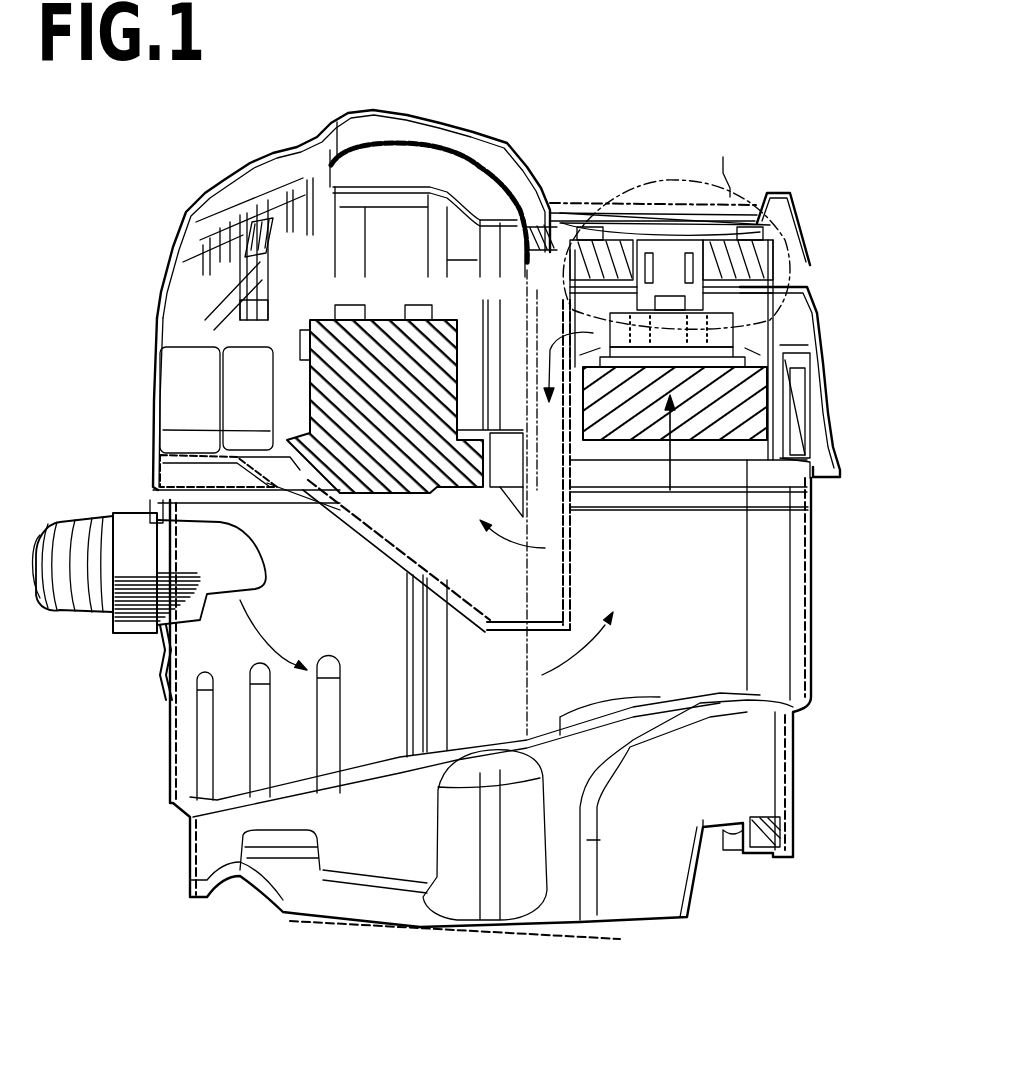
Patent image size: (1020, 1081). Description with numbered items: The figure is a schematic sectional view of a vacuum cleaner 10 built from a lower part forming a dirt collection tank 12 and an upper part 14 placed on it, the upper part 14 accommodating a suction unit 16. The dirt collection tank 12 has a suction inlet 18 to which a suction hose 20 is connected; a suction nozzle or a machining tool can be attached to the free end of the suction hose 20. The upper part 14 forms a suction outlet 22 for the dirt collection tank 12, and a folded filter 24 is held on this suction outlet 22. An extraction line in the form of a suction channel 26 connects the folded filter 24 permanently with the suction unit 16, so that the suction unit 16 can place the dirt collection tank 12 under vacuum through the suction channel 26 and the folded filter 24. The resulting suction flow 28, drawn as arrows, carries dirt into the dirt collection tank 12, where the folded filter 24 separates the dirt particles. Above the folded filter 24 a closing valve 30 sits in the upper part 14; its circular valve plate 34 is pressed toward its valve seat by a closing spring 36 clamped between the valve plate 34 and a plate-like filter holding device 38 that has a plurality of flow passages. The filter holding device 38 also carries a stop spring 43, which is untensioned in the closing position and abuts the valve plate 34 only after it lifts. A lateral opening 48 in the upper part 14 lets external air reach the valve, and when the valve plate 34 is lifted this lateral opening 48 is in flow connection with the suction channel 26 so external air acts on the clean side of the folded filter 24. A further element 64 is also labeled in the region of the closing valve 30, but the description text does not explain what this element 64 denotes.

The vacuum cleaner 10 is at (803, 156).
The dirt collection tank 12 is at (158, 755).
The upper part 14 is at (150, 325).
The suction unit 16 is at (312, 367).
The suction inlet 18 is at (147, 607).
The suction hose 20 is at (63, 557).
The suction outlet 22 is at (776, 372).
The folded filter 24 is at (610, 425).
The suction channel 26 is at (538, 290).
The suction flow 28 is at (580, 660).
The closing valve 30 is at (810, 222).
The valve plate 34 is at (720, 300).
The closing spring 36 is at (705, 318).
The filter holding device 38 is at (723, 420).
The stop spring 43 is at (655, 420).
The lateral opening 48 is at (775, 253).
The actuating element 64 is at (667, 303).